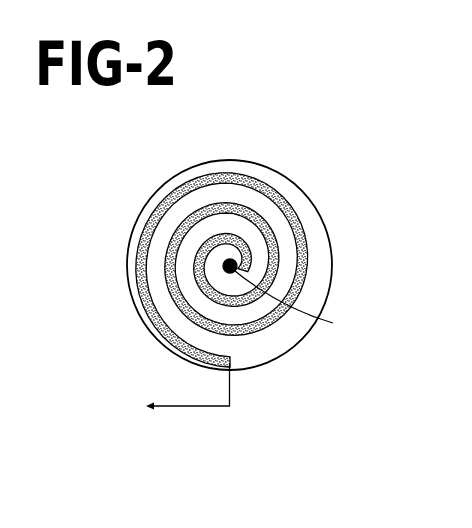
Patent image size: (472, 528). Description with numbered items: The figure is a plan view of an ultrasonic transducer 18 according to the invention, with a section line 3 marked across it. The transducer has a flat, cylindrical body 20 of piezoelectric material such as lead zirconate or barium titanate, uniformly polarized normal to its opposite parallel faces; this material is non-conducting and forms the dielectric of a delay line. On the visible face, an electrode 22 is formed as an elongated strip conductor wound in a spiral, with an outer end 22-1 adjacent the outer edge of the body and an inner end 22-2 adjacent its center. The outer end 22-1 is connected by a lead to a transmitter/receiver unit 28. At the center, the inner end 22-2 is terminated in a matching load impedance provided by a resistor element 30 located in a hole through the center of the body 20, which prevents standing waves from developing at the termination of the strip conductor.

The ultrasonic transducer 18 is at (234, 274).
The piezoelectric body 20 is at (330, 246).
The spiral strip electrode 22 is at (298, 210).
The outer end of strip electrode 22-1 is at (235, 370).
The inner end of strip electrode 22-2 is at (307, 302).
The resistor element 30 is at (229, 265).
The transmitter/receiver unit 28 is at (120, 444).
The section line 3- 3 is at (249, 513).